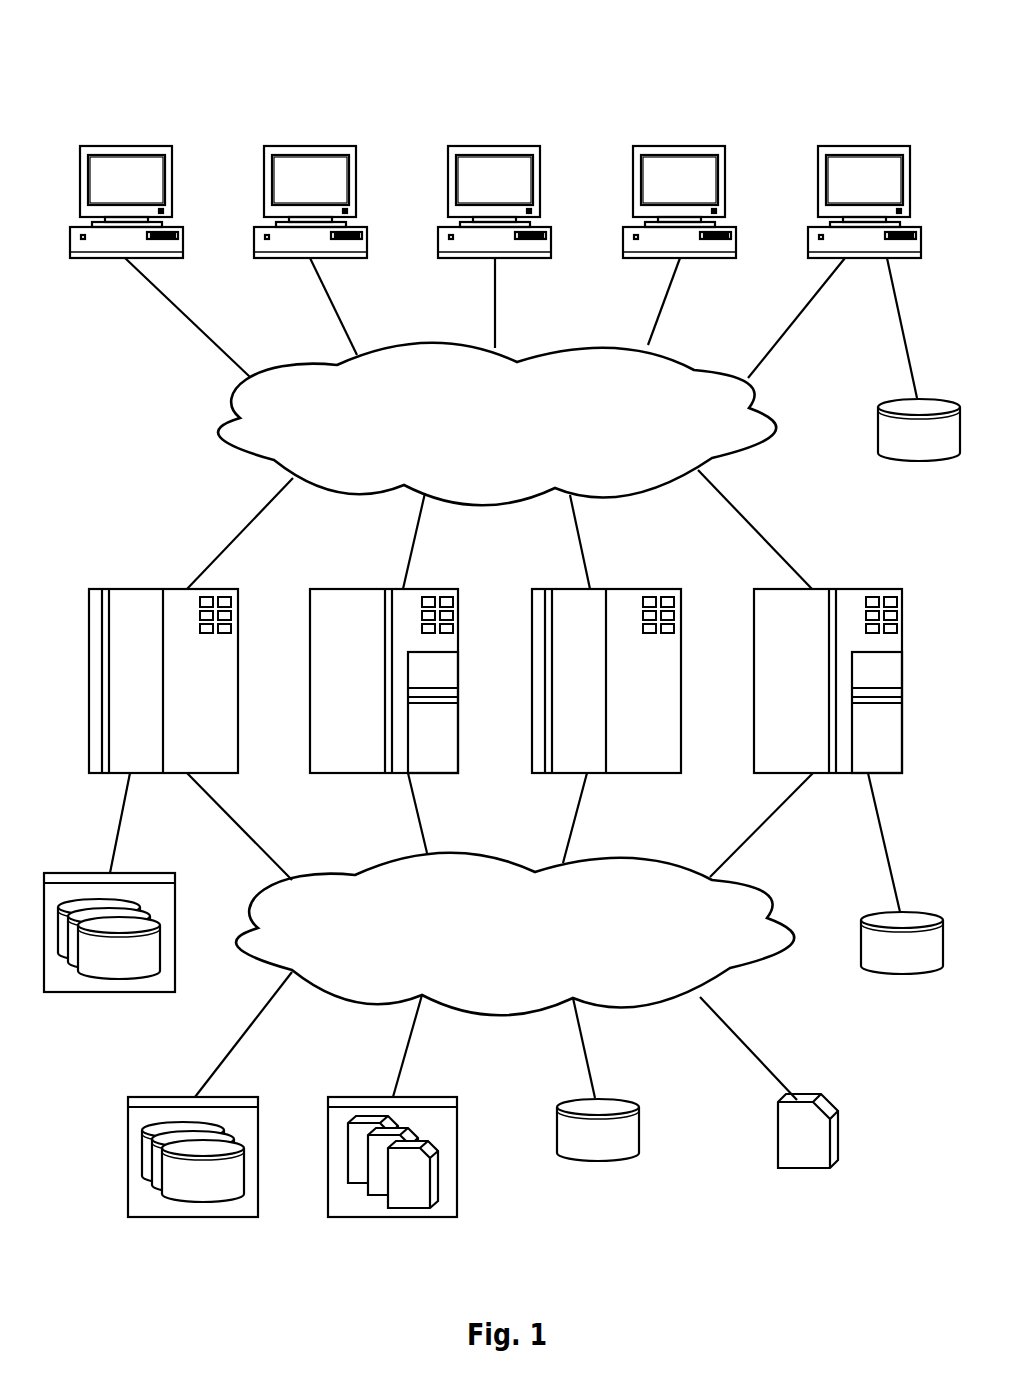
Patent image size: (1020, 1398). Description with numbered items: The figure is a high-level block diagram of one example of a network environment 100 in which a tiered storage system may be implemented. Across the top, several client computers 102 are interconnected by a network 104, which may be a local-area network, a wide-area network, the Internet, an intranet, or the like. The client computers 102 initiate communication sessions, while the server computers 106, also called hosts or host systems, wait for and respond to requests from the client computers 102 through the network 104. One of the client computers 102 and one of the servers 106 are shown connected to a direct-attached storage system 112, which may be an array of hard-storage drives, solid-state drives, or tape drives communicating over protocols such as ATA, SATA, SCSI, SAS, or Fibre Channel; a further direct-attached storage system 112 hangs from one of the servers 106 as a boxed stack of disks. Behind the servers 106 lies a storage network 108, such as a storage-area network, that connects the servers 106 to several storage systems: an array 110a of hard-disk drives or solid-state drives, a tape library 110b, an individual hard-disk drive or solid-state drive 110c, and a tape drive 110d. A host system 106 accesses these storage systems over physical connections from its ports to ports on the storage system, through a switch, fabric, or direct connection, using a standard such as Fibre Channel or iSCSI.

The network environment 100 is at (203, 72).
The client computer 102 is at (108, 188).
The network 104 is at (477, 450).
The server computer 106 is at (118, 689).
The storage network 108 is at (497, 960).
The array of hard-disk drives or solid-state drives 110a is at (192, 1217).
The tape library 110b is at (387, 1217).
The individual hard-disk drive or solid-state drive 110c is at (595, 1162).
The tape drive 110d is at (803, 1168).
The direct-attached storage system 112 is at (110, 992).